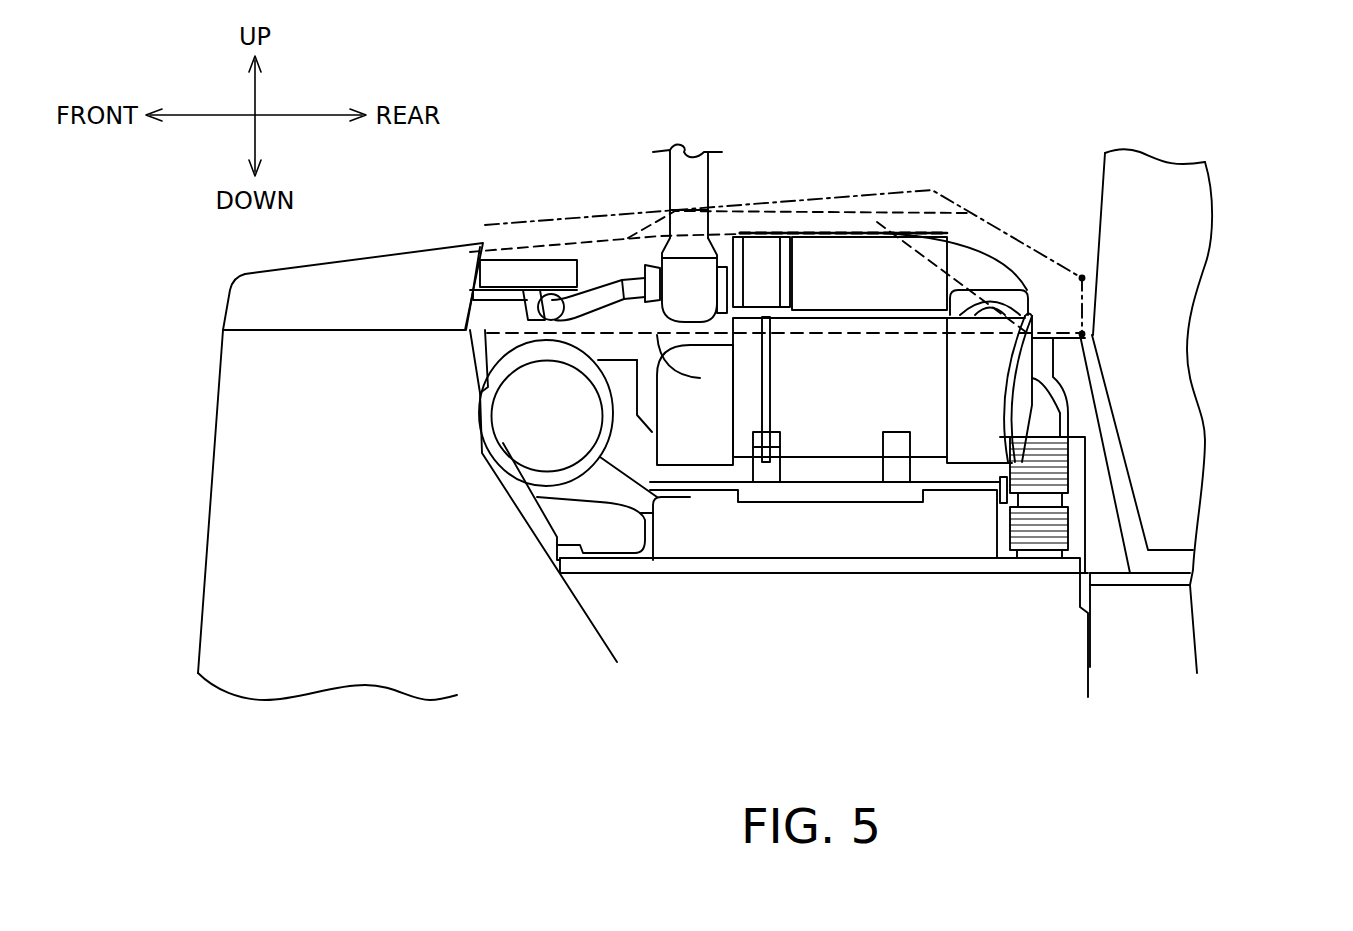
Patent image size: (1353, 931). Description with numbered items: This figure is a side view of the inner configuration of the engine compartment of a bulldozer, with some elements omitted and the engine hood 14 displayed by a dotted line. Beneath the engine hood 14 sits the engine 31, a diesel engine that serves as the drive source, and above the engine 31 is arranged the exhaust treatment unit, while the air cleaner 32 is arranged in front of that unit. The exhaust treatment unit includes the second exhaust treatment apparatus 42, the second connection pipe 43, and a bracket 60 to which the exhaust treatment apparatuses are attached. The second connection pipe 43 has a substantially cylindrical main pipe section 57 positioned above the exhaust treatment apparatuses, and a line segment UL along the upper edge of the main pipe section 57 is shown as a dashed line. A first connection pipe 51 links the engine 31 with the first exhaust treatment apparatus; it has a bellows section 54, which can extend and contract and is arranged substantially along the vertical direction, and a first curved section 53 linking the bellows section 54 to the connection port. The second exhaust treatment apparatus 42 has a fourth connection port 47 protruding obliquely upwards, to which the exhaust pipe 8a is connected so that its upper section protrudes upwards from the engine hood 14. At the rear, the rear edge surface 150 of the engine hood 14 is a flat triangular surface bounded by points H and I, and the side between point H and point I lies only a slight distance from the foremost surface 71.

The exhaust pipe 8a is at (710, 185).
The engine hood 14 is at (557, 246).
The engine 31 is at (780, 533).
The air cleaner 32 is at (532, 440).
The second exhaust treatment apparatus 42 is at (860, 407).
The second connection pipe 43 is at (972, 237).
The fourth connection port 47 is at (683, 367).
The first connection pipe 51 is at (1062, 391).
The first curved section 53 is at (1043, 418).
The bellows section 54 is at (1055, 478).
The main pipe section 57 is at (823, 270).
The bracket 60 is at (827, 493).
The foremost surface 71 is at (1088, 212).
The rear edge surface 150 is at (1085, 302).
The line segment UL is at (893, 238).
The point I is at (1083, 279).
The point H is at (1093, 335).